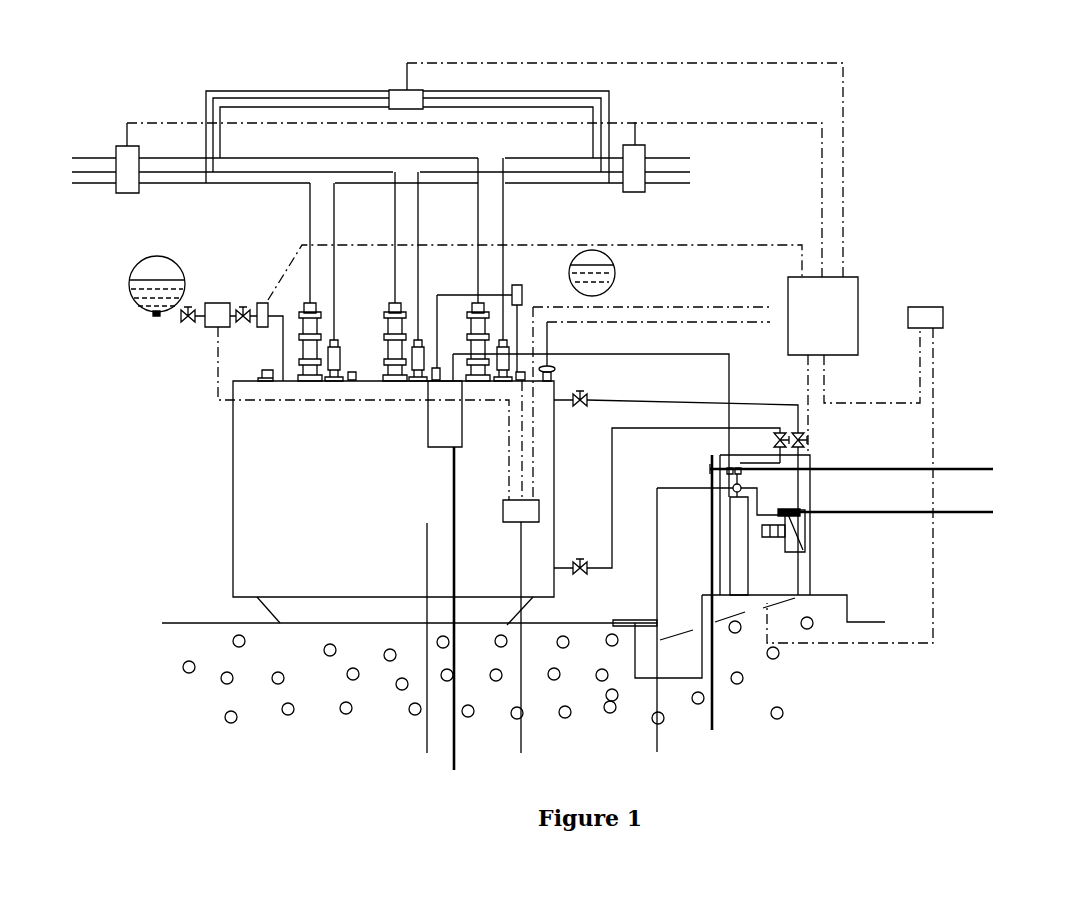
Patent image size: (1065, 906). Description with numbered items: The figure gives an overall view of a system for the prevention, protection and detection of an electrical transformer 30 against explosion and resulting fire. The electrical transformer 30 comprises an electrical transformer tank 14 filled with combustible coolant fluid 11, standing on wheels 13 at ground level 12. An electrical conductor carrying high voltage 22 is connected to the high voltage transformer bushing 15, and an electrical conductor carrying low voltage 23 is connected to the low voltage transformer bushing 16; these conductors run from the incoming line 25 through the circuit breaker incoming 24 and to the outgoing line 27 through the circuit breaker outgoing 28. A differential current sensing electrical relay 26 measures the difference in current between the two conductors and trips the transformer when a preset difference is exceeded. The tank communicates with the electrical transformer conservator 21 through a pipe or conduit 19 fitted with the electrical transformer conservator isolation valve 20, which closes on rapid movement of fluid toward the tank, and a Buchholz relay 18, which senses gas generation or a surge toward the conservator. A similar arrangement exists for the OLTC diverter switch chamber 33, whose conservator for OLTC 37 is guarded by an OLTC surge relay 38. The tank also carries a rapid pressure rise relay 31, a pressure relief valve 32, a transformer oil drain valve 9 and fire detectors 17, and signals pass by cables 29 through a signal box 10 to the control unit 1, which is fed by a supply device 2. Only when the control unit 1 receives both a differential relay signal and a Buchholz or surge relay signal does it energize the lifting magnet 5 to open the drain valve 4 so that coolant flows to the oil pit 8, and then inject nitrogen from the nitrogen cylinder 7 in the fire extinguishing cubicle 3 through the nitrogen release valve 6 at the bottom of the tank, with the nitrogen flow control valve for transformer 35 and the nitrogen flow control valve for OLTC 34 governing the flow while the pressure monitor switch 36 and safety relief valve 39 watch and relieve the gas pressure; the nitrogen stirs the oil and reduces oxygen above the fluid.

The control unit 1 is at (859, 282).
The supply device 2 is at (943, 318).
The fire extinguishing cubicle 3 is at (788, 478).
The drain valve 4 is at (805, 514).
The lifting magnet 5 is at (807, 521).
The nitrogen release valve 6 is at (793, 547).
The nitrogen cylinder 7 is at (743, 567).
The oil pit 8 is at (687, 665).
The transformer oil drain valve 9 is at (586, 397).
The signal box 10 is at (378, 542).
The combustible coolant fluid 11 is at (427, 650).
The ground level 12 is at (182, 623).
The wheels 13 is at (265, 610).
The electrical transformer tank 14 is at (258, 508).
The high voltage transformer bushing 15 is at (305, 357).
The low voltage transformer bushing 16 is at (315, 383).
The fire detectors 17 is at (262, 375).
The Buchholz relay 18 is at (263, 327).
The pipe or conduit 19 is at (181, 316).
The electrical transformer conservator isolation valve 20 is at (182, 312).
The electrical transformer conservator 21 is at (156, 256).
The electrical conductor carrying high voltage 22 is at (393, 247).
The electrical conductor carrying low voltage 23 is at (418, 215).
The circuit breaker incoming 24 is at (116, 150).
The incoming line 25 is at (240, 91).
The differential current sensing electrical relay 26 is at (400, 92).
The outgoing line 27 is at (507, 91).
The circuit breaker outgoing 28 is at (643, 145).
The cables 29 is at (549, 367).
The electrical transformer 30 is at (347, 596).
The rapid pressure rise relay 31 is at (556, 379).
The pressure relief valve 32 is at (557, 380).
The OLTC diverter switch chamber 33 is at (451, 587).
The nitrogen flow control valve for OLTC 34 is at (714, 604).
The nitrogen flow control valve for transformer 35 is at (864, 467).
The pressure monitor switch 36 is at (898, 512).
The conservator for OLTC 37 is at (605, 254).
The OLTC surge relay 38 is at (520, 285).
The safety relief valve 39 is at (639, 633).